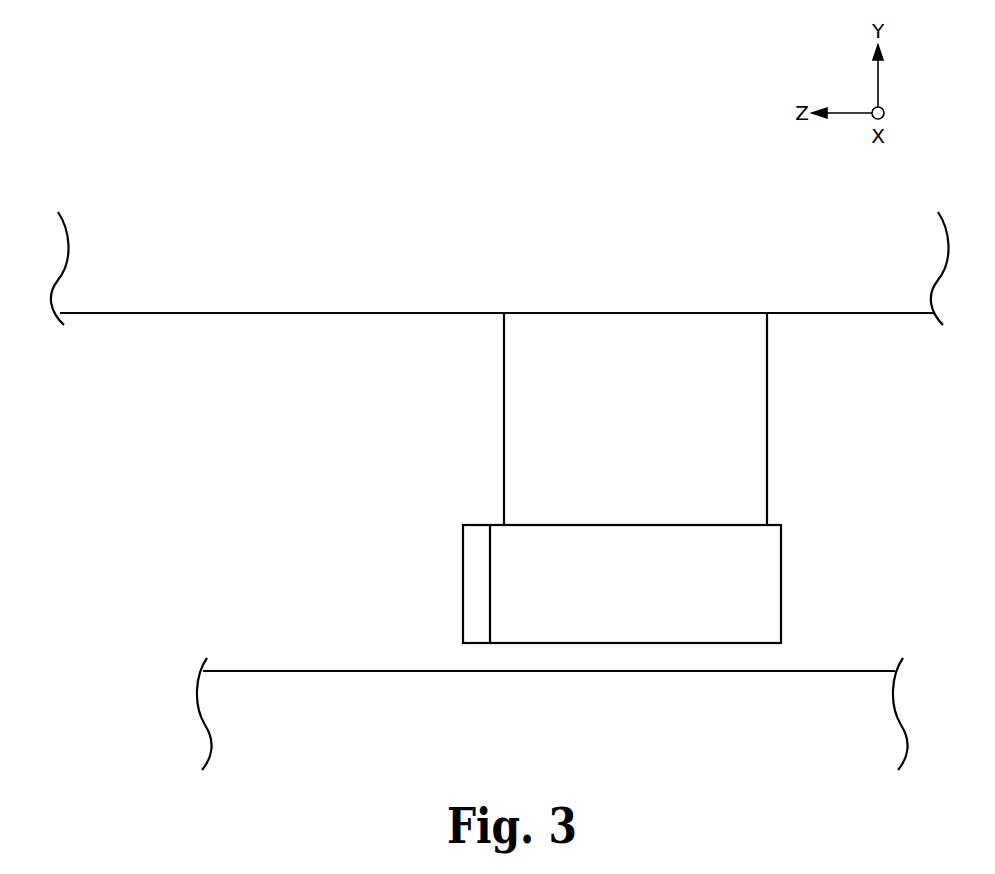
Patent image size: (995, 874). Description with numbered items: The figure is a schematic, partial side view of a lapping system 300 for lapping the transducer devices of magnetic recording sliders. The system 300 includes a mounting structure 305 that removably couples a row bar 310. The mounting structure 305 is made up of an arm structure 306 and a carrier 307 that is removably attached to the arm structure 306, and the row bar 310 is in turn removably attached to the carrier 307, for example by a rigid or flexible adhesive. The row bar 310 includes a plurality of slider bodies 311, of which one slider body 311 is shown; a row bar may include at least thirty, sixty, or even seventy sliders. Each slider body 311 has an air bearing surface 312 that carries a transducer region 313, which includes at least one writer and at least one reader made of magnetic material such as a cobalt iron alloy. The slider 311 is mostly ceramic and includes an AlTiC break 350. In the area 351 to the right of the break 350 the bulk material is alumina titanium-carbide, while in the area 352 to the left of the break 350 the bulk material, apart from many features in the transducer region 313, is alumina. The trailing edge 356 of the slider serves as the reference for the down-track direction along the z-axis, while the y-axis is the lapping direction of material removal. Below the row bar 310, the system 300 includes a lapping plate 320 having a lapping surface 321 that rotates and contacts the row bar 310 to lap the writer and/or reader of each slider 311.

The system 300 is at (96, 163).
The mounting structure 305 is at (797, 364).
The arm structure 306 is at (480, 270).
The carrier 307 is at (620, 430).
The row bar 310 is at (796, 558).
The slider body 311 is at (620, 597).
The air bearing surface 312 is at (722, 643).
The transducer region 313 is at (492, 645).
The lapping plate 320 is at (531, 727).
The lapping surface 321 is at (840, 671).
The AlTiC break 350 is at (491, 582).
The area to the right of break 351 is at (535, 545).
The area to the left of break 352 is at (477, 548).
The trailing edge 356 is at (461, 644).